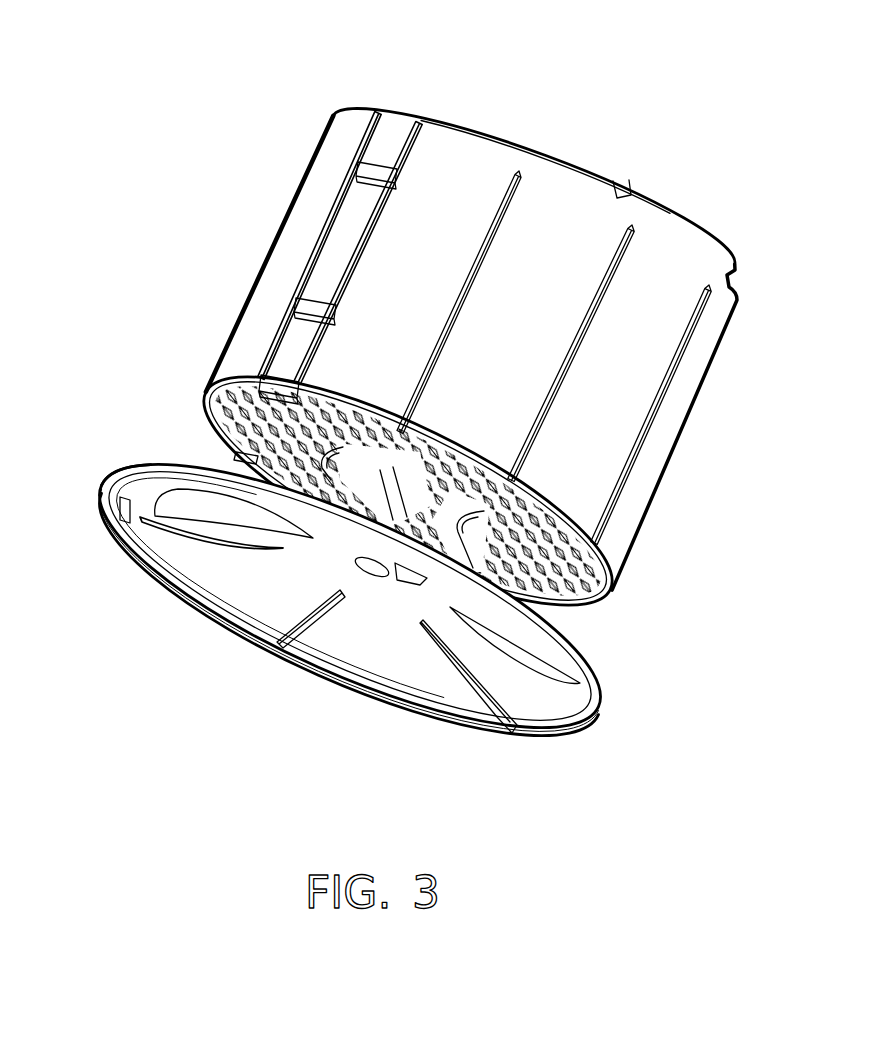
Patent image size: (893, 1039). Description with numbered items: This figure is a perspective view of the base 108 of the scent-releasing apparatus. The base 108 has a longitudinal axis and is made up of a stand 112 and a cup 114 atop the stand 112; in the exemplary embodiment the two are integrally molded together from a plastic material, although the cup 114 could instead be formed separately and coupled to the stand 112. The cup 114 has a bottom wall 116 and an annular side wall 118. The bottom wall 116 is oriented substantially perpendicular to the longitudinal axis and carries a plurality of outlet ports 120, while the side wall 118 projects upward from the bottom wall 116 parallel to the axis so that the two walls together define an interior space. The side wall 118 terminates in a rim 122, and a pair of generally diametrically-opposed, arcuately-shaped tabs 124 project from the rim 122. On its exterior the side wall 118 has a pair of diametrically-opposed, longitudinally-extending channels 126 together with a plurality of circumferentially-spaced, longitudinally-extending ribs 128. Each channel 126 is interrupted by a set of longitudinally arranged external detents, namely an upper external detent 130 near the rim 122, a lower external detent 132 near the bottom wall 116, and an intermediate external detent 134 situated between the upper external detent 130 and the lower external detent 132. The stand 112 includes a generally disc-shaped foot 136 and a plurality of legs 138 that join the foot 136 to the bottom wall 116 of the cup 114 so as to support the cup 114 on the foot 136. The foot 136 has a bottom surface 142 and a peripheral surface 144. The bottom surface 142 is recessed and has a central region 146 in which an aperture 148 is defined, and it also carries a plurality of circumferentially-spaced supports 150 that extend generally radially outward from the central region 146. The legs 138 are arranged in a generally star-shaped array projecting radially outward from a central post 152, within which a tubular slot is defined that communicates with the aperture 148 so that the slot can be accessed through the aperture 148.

The base 108 is at (407, 406).
The stand 112 is at (377, 601).
The cup 114 is at (454, 350).
The bottom wall 116 is at (592, 594).
The side wall 118 is at (247, 305).
The outlet ports 120 is at (245, 432).
The rim 122 is at (492, 133).
The tabs 124 is at (668, 200).
The channels 126 is at (353, 228).
The ribs 128 is at (485, 263).
The upper external detent 130 is at (390, 160).
The lower external detent 132 is at (290, 372).
The intermediate external detent 134 is at (323, 302).
The foot 136 is at (143, 474).
The legs 138 is at (433, 523).
The bottom surface 142 is at (358, 630).
The peripheral surface 144 is at (585, 676).
The central region 146 is at (337, 580).
The aperture 148 is at (383, 577).
The supports 150 is at (172, 532).
The central post 152 is at (245, 455).